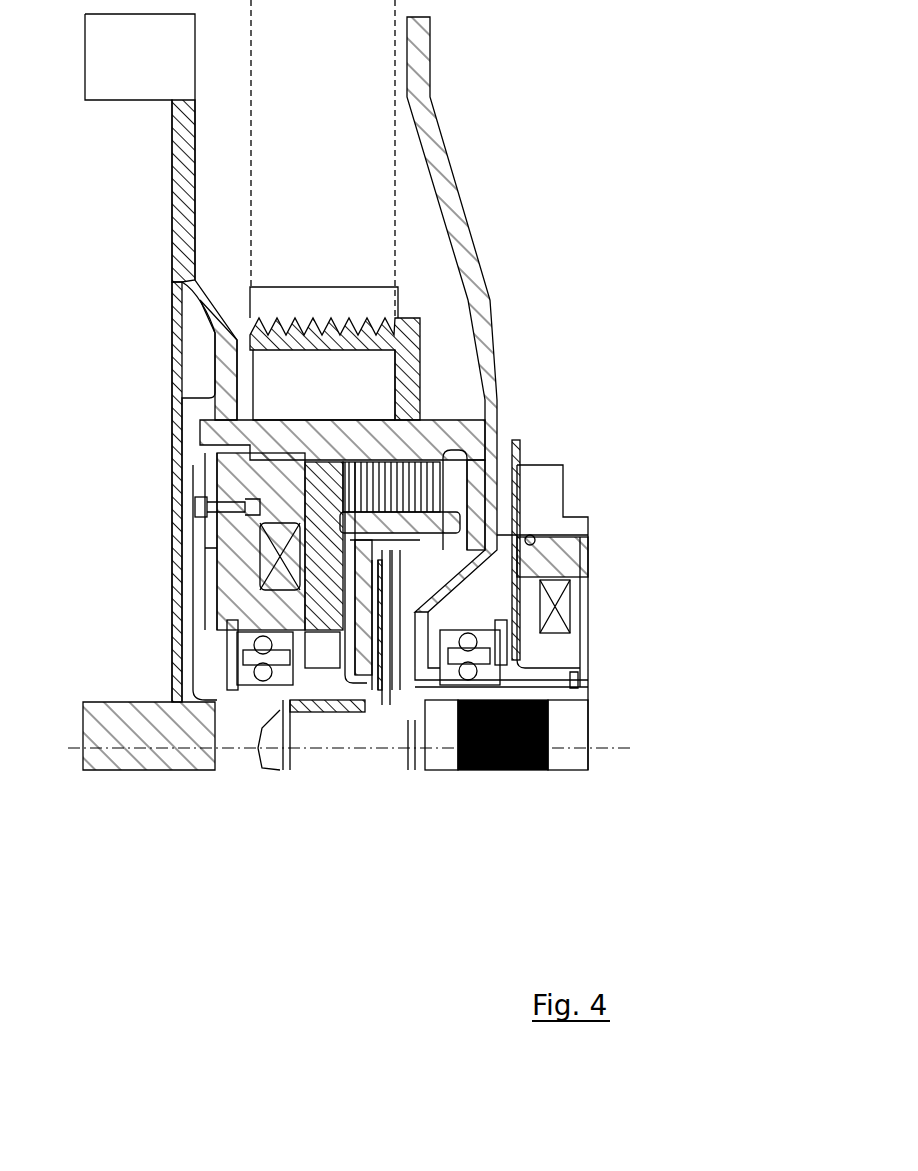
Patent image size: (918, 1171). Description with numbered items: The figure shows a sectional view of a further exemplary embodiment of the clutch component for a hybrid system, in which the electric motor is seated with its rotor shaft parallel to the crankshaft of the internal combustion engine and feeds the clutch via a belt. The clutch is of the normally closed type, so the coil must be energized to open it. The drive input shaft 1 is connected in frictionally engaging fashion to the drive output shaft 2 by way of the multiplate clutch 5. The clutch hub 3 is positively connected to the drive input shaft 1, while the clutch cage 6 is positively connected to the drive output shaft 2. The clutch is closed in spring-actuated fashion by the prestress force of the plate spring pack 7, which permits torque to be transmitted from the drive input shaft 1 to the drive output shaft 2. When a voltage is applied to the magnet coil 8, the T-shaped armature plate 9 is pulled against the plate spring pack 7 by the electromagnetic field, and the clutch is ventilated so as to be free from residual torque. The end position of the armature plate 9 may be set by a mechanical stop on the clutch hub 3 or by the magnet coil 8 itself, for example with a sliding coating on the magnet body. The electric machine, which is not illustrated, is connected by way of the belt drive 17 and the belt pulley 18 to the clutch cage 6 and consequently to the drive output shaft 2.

The drive input shaft 1 is at (202, 718).
The drive output shaft 2 is at (542, 693).
The clutch hub 3 is at (405, 522).
The multiplate clutch 5 is at (393, 483).
The clutch cage 6 is at (475, 538).
The plate spring pack 7 is at (400, 577).
The magnet coil 8 is at (237, 595).
The armature plate 9 is at (323, 593).
The belt drive 17 is at (327, 300).
The belt pulley 18 is at (408, 367).